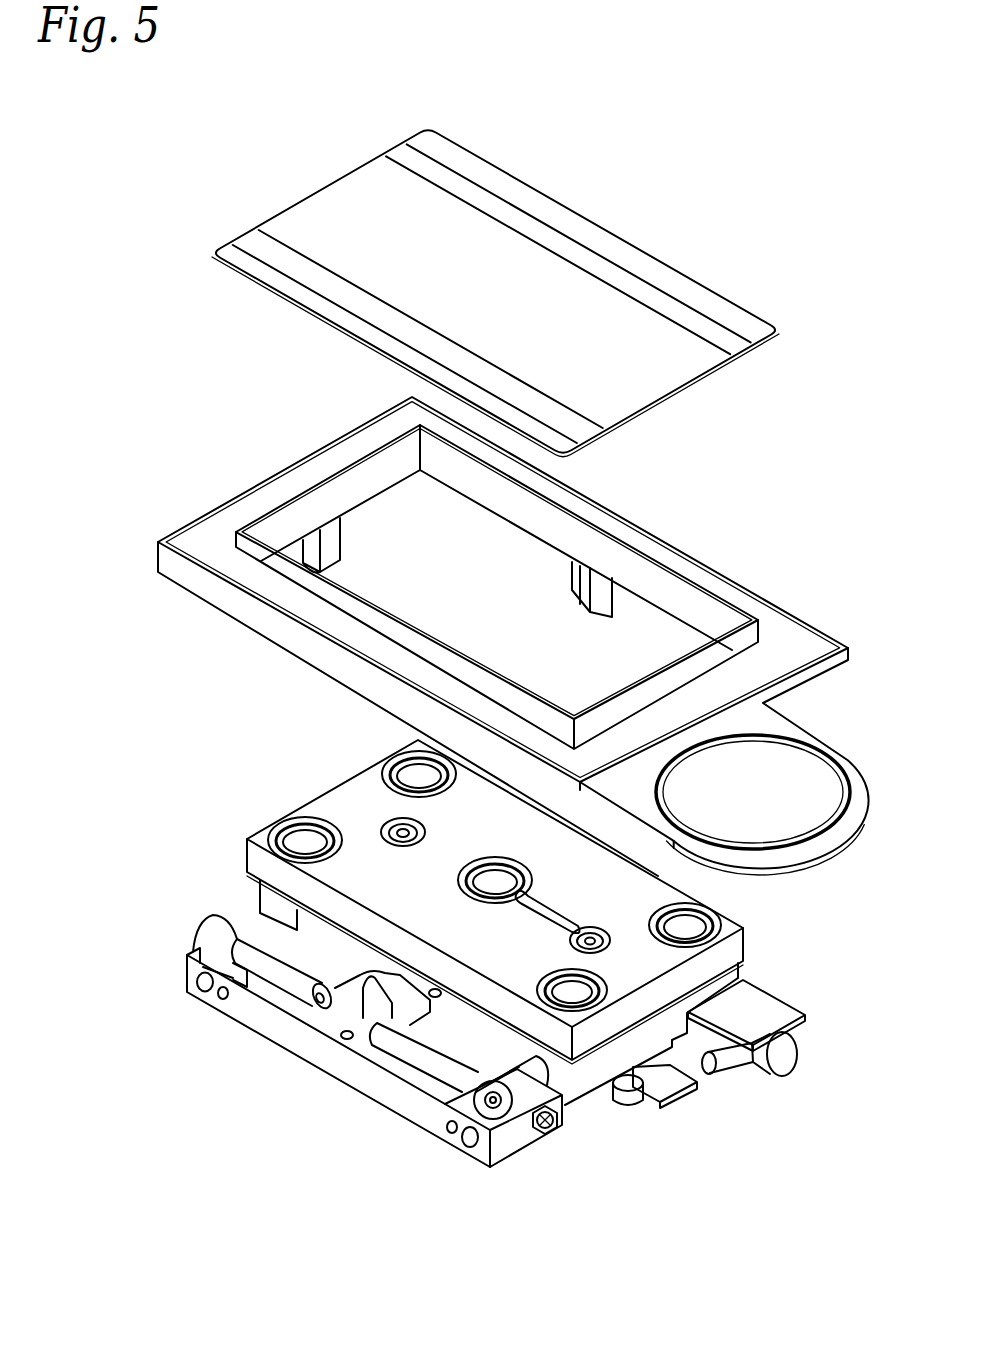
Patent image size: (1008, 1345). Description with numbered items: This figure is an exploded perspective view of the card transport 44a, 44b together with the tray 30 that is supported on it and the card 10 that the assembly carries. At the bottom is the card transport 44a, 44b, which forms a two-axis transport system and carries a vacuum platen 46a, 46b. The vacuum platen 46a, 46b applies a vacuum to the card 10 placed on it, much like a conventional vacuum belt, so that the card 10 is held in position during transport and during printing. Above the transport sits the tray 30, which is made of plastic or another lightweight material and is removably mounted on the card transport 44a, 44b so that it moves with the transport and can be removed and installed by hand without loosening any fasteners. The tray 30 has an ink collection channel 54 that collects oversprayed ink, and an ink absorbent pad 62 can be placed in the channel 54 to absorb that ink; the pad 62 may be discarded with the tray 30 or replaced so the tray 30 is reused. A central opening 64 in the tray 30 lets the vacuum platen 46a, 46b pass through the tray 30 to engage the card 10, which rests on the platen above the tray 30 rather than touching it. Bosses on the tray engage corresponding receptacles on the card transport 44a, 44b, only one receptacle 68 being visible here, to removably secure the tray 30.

The card 10 is at (657, 252).
The tray 30 is at (509, 627).
The ink collection channel 54 is at (213, 538).
The ink absorbent pad 62 is at (777, 652).
The central opening 64 is at (408, 523).
The vacuum platen 46a is at (463, 896).
The vacuum platen 46b is at (331, 787).
The card transport 44a is at (496, 1067).
The card transport 44b is at (496, 1067).
The receptacle 68 is at (365, 988).